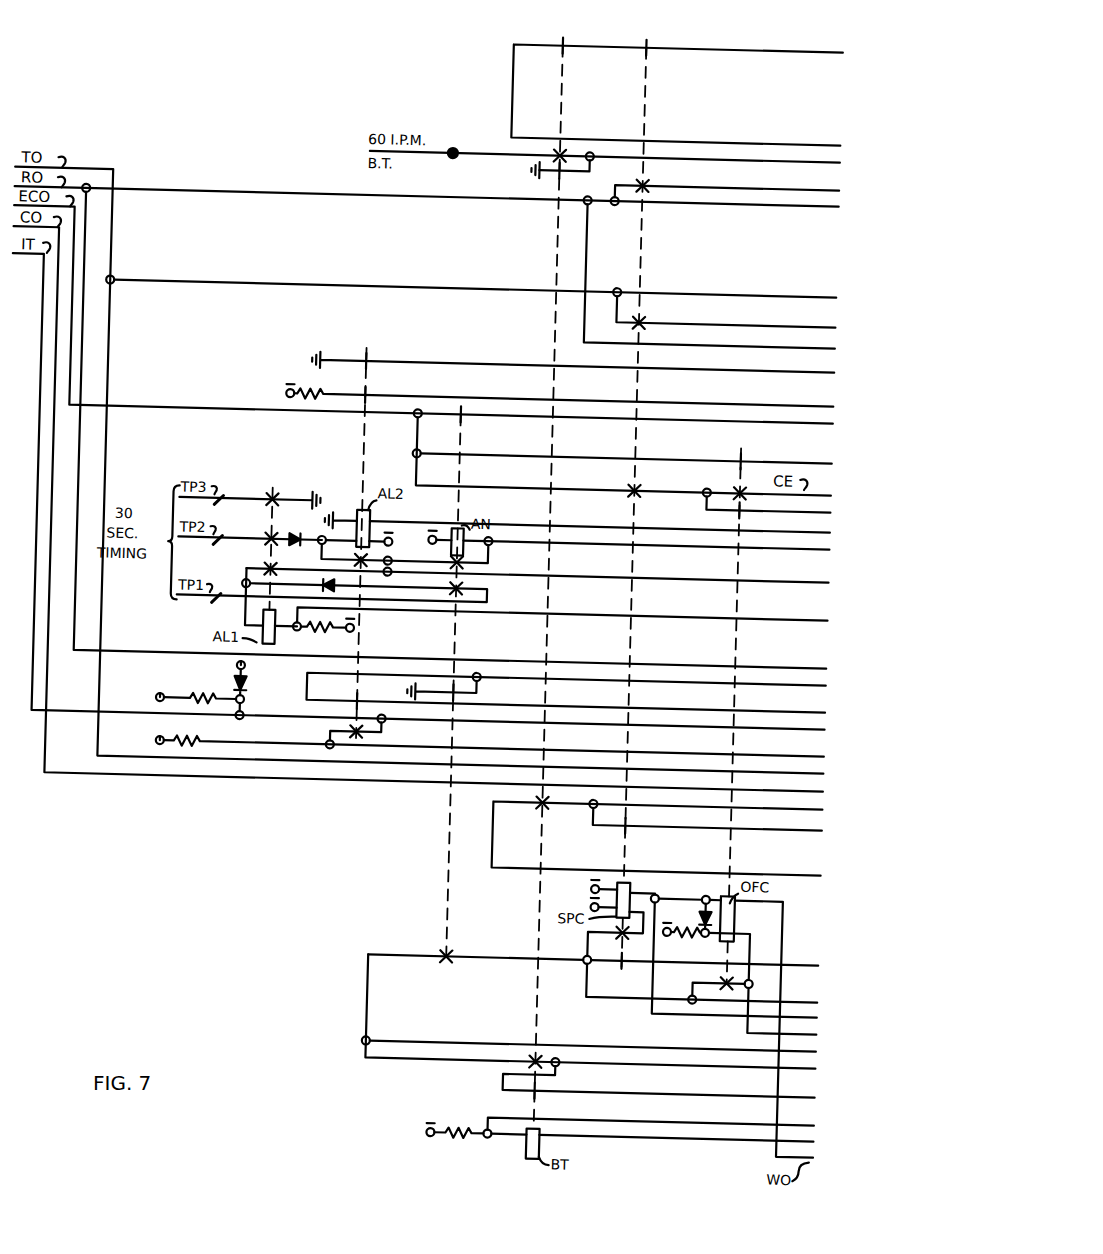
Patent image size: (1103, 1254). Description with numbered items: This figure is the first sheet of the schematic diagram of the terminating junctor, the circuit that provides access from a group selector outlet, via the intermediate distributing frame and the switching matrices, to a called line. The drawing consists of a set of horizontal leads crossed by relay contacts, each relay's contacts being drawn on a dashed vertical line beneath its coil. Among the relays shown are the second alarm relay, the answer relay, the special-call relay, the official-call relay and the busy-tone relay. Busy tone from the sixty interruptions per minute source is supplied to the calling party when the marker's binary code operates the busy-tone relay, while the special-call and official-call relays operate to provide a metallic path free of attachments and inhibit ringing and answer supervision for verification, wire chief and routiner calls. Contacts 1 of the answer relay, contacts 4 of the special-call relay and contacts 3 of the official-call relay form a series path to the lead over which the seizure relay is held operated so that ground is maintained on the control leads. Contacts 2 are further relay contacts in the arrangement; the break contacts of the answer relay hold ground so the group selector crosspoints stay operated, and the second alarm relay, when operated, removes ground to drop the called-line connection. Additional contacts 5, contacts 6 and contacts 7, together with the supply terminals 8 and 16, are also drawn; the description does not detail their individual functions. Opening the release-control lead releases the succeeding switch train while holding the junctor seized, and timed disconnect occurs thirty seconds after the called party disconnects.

The relay contacts 1 is at (543, 35).
The relay contacts 2 is at (546, 144).
The relay contacts 3 is at (551, 177).
The relay contacts 4 is at (628, 484).
The relay contact 5 is at (366, 735).
The relay contact 6 is at (633, 934).
The relay contact 7 is at (629, 964).
The -8 volt supply terminal 8 is at (253, 667).
The 16 volt supply terminal 16 is at (161, 706).